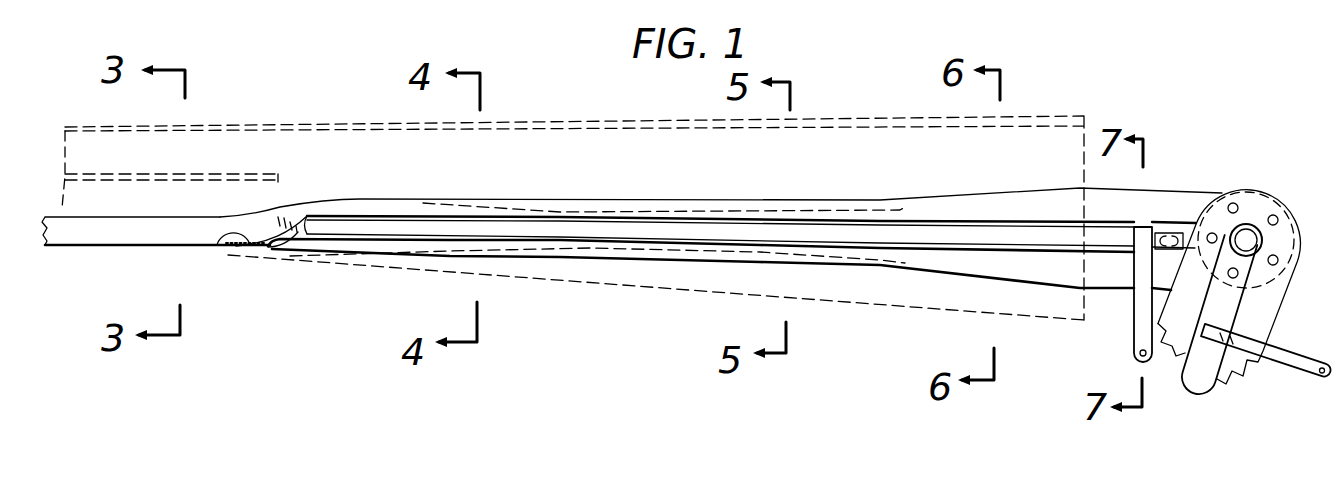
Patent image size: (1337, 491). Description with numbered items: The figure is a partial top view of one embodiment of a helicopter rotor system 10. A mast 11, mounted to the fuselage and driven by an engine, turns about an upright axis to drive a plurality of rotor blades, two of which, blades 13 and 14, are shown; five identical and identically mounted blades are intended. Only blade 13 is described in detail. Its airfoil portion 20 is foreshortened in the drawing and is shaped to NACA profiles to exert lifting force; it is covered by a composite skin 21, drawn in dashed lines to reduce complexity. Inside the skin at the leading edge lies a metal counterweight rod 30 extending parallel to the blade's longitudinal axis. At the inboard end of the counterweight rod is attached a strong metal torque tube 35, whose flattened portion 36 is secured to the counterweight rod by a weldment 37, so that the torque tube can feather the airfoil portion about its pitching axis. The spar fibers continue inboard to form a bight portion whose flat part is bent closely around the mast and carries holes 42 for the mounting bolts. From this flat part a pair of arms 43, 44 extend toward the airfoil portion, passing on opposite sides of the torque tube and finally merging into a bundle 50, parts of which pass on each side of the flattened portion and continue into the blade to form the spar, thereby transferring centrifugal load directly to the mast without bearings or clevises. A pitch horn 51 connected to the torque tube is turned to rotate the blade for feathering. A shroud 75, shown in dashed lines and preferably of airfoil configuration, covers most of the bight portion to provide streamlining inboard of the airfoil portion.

The helicopter rotor system 10 is at (1184, 140).
The mast 11 is at (1258, 224).
The blade 13 is at (113, 259).
The blade 14 is at (1264, 380).
The airfoil portion 20 is at (58, 149).
The skin 21 is at (238, 148).
The counterweight rod 30 is at (170, 250).
The torque tube 35 is at (401, 222).
The flattened portion 36 is at (282, 236).
The weldment 37 is at (222, 248).
The holes 42 is at (1279, 219).
The arm 43 is at (1160, 187).
The arm 44 is at (1098, 295).
The bundle 50 is at (328, 243).
The pitch horn 51 is at (1134, 342).
The shroud 75 is at (1046, 117).